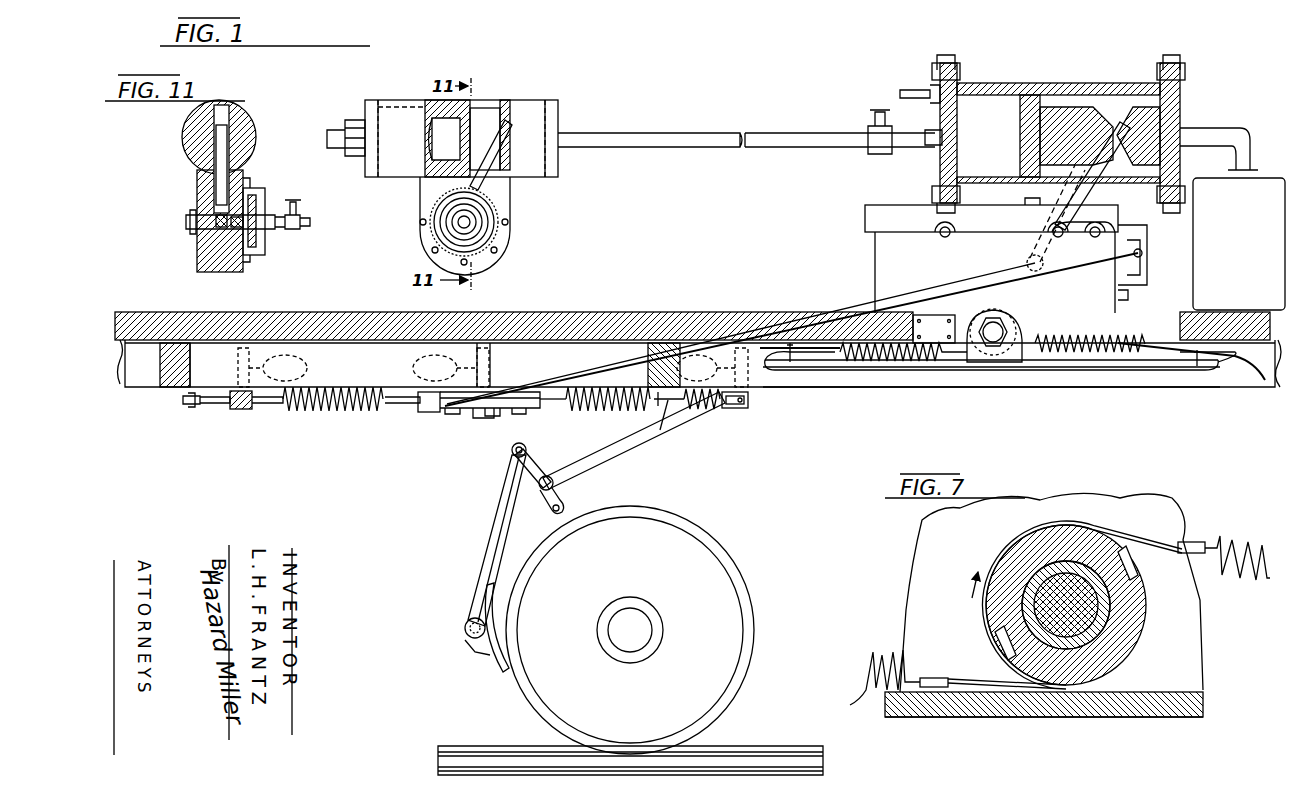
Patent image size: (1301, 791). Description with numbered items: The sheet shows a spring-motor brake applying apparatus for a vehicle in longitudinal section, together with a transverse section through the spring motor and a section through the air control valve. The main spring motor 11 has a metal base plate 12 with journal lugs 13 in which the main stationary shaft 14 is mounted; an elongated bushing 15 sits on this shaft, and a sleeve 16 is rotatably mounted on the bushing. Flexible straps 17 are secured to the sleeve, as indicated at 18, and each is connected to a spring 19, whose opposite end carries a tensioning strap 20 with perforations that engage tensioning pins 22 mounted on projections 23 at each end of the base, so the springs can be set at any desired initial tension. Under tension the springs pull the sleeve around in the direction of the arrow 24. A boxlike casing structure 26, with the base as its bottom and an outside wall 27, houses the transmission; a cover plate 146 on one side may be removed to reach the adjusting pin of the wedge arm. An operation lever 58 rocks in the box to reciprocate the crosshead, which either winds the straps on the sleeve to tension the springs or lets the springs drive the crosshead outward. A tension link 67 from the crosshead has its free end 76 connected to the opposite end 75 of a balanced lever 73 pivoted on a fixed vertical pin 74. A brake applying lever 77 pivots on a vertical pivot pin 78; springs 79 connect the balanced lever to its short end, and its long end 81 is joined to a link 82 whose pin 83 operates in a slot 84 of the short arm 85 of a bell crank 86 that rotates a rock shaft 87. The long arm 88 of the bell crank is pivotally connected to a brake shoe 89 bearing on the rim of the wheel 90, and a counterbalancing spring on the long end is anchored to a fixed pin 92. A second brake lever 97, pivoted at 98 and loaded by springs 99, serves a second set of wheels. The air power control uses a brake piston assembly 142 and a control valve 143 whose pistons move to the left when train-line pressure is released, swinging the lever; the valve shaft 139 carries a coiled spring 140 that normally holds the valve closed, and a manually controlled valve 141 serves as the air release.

In FIG. 1, the main spring motor 11 is at (1045, 370).
In FIG. 7, the main spring motor 11 is at (1140, 722).
In FIG. 1, the base plate 12 is at (938, 372).
In FIG. 7, the base plate 12 is at (1055, 712).
In FIG. 1, the journal lug 13 is at (1000, 312).
In FIG. 7, the main stationary shaft 14 is at (1040, 608).
In FIG. 7, the elongated bushing 15 is at (1100, 606).
In FIG. 7, the sleeve 16 is at (1128, 657).
In FIG. 7, the flexible strap 17 is at (1005, 535).
In FIG. 7, the strap securing point 18 is at (1004, 640).
In FIG. 1, the spring 19 is at (880, 362).
In FIG. 7, the spring 19 is at (1222, 540).
In FIG. 1, the tensioning strap 20 is at (1226, 366).
In FIG. 1, the tensioning pin 22 is at (792, 365).
In FIG. 1, the projection 23 is at (790, 366).
In FIG. 7, the arrow 24 is at (954, 591).
In FIG. 1, the boxlike casing structure 26 is at (862, 245).
In FIG. 1, the outside wall 27 is at (1000, 262).
In FIG. 1, the operation lever 58 is at (1125, 160).
In FIG. 1, the tension link 67 is at (870, 318).
In FIG. 1, the balanced lever 73 is at (462, 410).
In FIG. 1, the fixed vertical pin 74 is at (445, 368).
In FIG. 1, the opposite end of balanced lever 75 is at (420, 410).
In FIG. 1, the free end of link 76 is at (440, 410).
In FIG. 1, the brake applying lever 77 is at (738, 410).
In FIG. 1, the vertical pivot pin 78 is at (706, 368).
In FIG. 1, the spring 79 is at (638, 410).
In FIG. 1, the long end 81 is at (742, 410).
In FIG. 1, the link 82 is at (638, 440).
In FIG. 1, the pin 83 is at (540, 468).
In FIG. 1, the slot 84 is at (566, 495).
In FIG. 1, the short arm 85 is at (528, 455).
In FIG. 1, the bell crank 86 is at (500, 488).
In FIG. 1, the rock shaft 87 is at (517, 448).
In FIG. 1, the long arm 88 is at (497, 548).
In FIG. 1, the brake shoe 89 is at (486, 636).
In FIG. 1, the wheel 90 is at (538, 700).
In FIG. 1, the fixed pin 92 is at (666, 420).
In FIG. 1, the second brake lever 97 is at (242, 408).
In FIG. 1, the pivot 98 is at (278, 368).
In FIG. 1, the spring 99 is at (318, 408).
In FIG. 1, the shaft of control valve 139 is at (455, 225).
In FIG. 11, the shaft of control valve 139 is at (208, 225).
In FIG. 1, the coiled spring 140 is at (432, 212).
In FIG. 11, the coiled spring 140 is at (268, 242).
In FIG. 11, the manually controlled valve 141 is at (294, 230).
In FIG. 1, the brake piston assembly 142 is at (995, 84).
In FIG. 1, the control valve 143 is at (525, 95).
In FIG. 1, the cover plate 146 is at (930, 318).